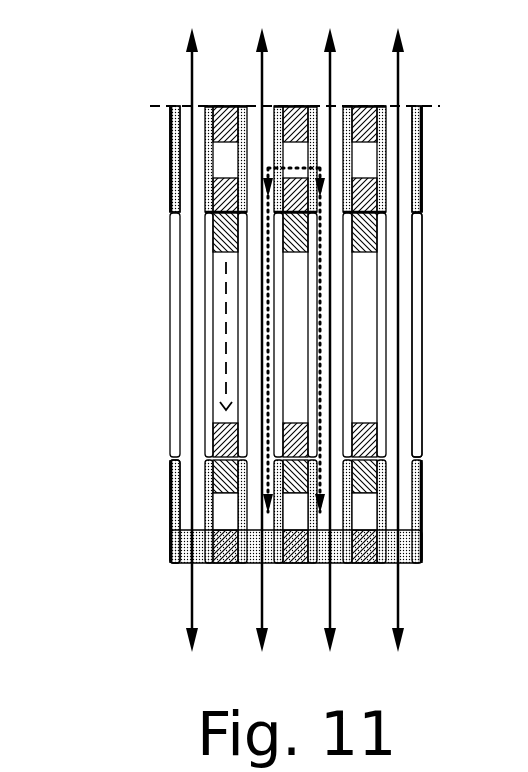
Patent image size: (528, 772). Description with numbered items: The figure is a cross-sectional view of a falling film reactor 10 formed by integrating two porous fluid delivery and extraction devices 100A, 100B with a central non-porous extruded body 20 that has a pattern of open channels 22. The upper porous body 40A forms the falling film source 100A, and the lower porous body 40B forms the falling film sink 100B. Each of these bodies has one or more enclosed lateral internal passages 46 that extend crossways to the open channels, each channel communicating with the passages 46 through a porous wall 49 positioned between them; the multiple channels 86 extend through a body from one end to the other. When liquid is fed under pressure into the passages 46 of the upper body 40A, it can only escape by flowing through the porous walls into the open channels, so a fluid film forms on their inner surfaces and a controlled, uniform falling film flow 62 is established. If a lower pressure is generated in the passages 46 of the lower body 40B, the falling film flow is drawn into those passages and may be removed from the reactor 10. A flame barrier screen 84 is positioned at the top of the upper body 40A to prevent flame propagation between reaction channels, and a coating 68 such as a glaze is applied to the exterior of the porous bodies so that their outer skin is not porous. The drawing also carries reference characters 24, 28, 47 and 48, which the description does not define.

The falling film reactor 10 is at (104, 558).
The non-porous extruded body 20 is at (176, 397).
The open channels 22 is at (405, 265).
The interior chamber 24 is at (363, 351).
The flow path 28 is at (226, 322).
The upper porous body 40A is at (170, 187).
The lower porous body 40B is at (172, 512).
The lateral internal passages 46 is at (225, 162).
The outer end sleeve 47 is at (404, 170).
The flow arrows 48 is at (400, 88).
The porous wall 49 is at (372, 158).
The falling film flow 62 is at (300, 166).
The coating 68 is at (422, 125).
The flame barrier screen 84 is at (151, 106).
The channels 86 is at (183, 563).
The falling film source 100A is at (113, 107).
The falling film sink 100B is at (113, 463).